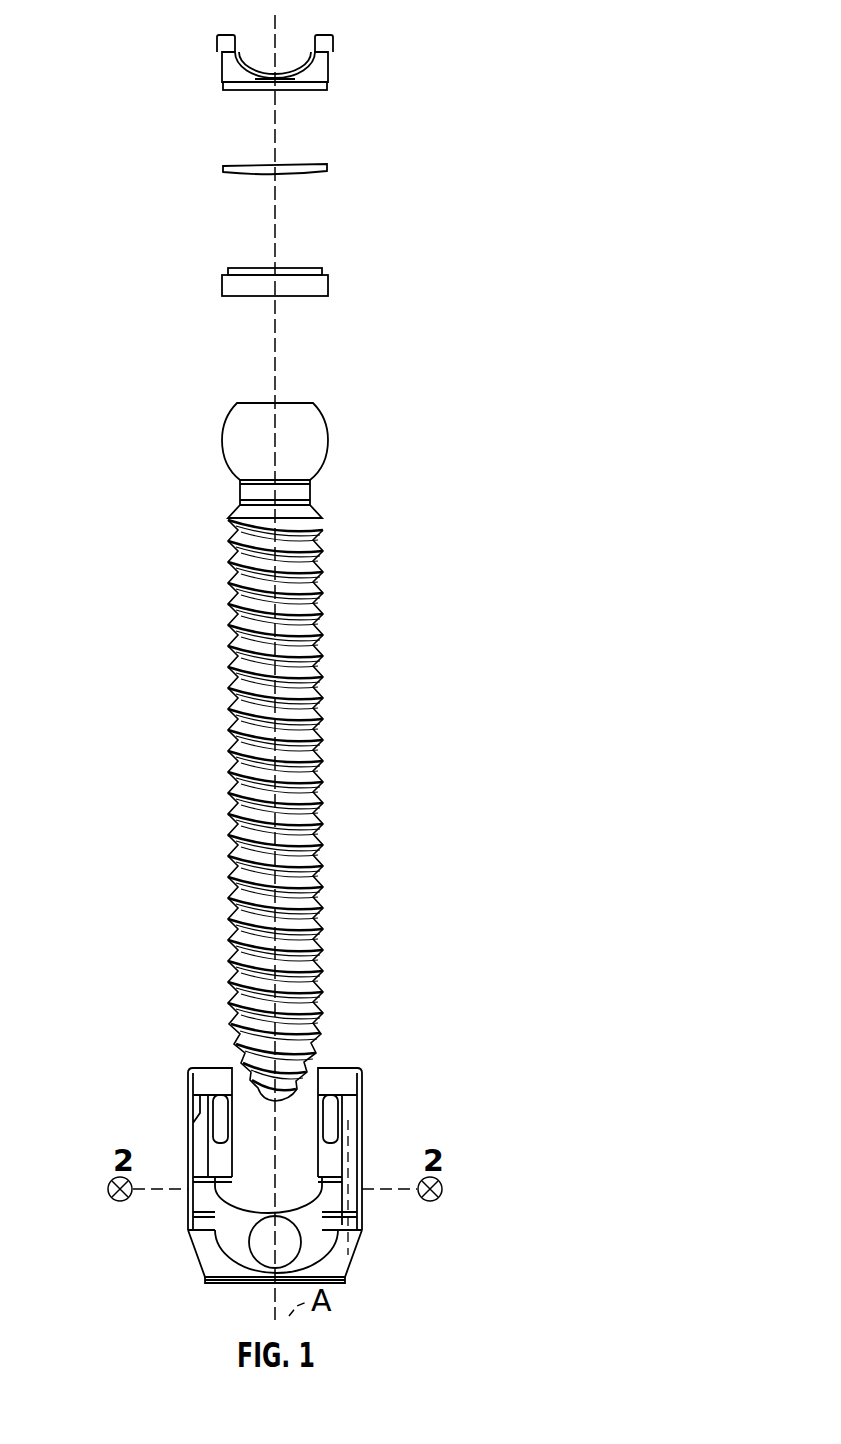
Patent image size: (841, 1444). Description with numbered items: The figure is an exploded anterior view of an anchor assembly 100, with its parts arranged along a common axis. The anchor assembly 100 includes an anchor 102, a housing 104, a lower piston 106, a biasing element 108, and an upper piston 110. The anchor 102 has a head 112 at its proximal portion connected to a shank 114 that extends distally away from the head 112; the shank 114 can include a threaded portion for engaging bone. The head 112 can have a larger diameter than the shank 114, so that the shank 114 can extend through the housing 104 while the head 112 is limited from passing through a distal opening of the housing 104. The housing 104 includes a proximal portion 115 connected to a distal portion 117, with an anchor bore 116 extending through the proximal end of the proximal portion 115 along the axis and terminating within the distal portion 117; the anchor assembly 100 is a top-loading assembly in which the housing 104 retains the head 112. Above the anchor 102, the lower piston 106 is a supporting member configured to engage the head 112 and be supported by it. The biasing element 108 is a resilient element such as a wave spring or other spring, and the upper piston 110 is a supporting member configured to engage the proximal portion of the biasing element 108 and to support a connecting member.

The anchor assembly 100 is at (580, 50).
The anchor 102 is at (333, 744).
The housing 104 is at (287, 1175).
The lower piston 106 is at (330, 290).
The biasing element 108 is at (325, 165).
The upper piston 110 is at (330, 75).
The head 112 is at (312, 425).
The shank 114 is at (325, 712).
The proximal portion 115 is at (168, 1082).
The anchor bore 116 is at (332, 1172).
The distal portion 117 is at (180, 1265).